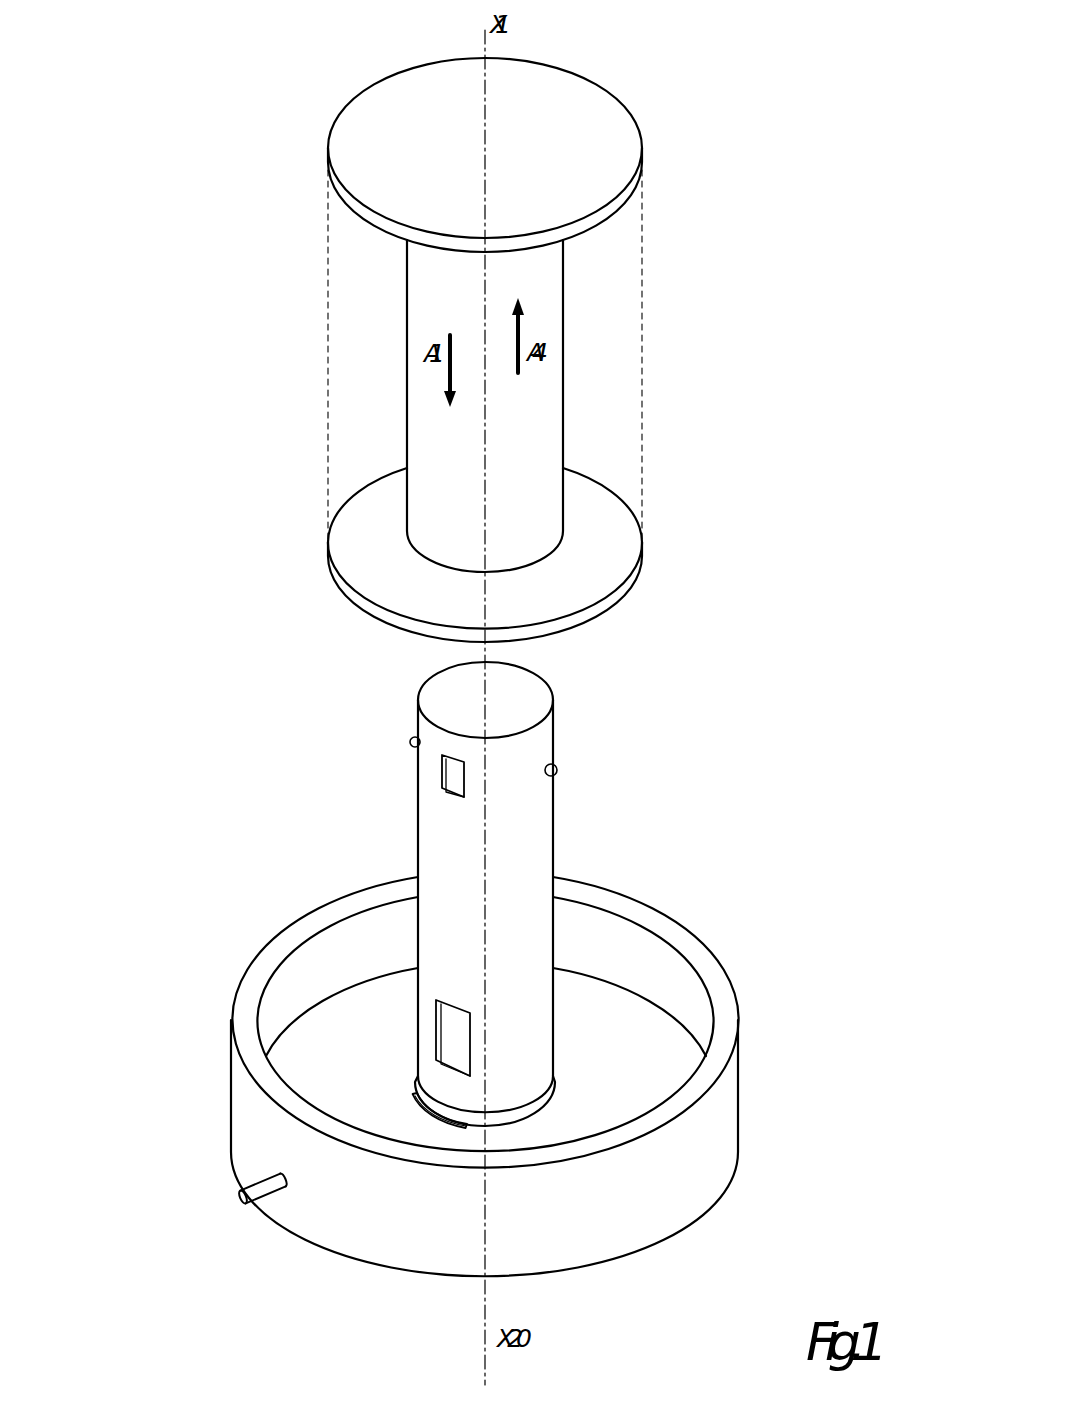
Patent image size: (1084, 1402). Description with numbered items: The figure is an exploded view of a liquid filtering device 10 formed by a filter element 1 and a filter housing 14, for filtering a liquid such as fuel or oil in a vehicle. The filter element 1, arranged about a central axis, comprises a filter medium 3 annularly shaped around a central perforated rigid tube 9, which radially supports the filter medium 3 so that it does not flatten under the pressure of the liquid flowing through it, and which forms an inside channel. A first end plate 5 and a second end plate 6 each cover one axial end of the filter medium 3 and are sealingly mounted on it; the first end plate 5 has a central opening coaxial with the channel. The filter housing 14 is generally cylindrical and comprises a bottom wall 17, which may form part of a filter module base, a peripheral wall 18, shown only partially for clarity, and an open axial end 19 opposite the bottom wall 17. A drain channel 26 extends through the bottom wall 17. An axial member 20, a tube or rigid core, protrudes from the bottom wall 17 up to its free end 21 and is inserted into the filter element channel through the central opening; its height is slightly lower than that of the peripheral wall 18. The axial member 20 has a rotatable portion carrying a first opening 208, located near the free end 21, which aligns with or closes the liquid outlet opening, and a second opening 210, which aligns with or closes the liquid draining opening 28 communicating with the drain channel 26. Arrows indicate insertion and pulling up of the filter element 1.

The filter element 1 is at (677, 283).
The filter medium 3 is at (610, 362).
The first end plate 5 is at (572, 582).
The second end plate 6 is at (597, 132).
The central perforated rigid tube 9 is at (510, 415).
The liquid filtering device 10 is at (248, 680).
The filter housing 14 is at (745, 950).
The bottom wall 17 is at (617, 1032).
The peripheral wall 18 is at (713, 1085).
The open axial end 19 is at (642, 783).
The axial member 20 is at (503, 790).
The free end 21 is at (519, 697).
The drain channel 26 is at (276, 1188).
The liquid draining opening 28 is at (418, 1097).
The first opening 208 is at (438, 775).
The second opening 210 is at (453, 1035).